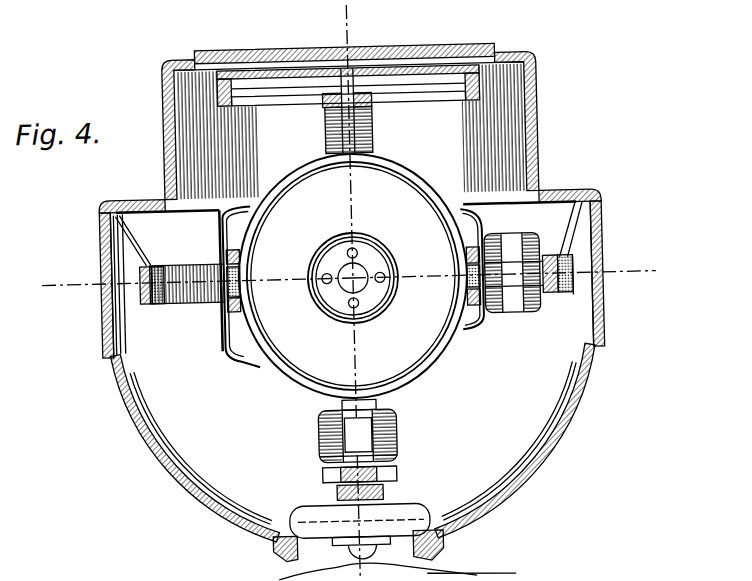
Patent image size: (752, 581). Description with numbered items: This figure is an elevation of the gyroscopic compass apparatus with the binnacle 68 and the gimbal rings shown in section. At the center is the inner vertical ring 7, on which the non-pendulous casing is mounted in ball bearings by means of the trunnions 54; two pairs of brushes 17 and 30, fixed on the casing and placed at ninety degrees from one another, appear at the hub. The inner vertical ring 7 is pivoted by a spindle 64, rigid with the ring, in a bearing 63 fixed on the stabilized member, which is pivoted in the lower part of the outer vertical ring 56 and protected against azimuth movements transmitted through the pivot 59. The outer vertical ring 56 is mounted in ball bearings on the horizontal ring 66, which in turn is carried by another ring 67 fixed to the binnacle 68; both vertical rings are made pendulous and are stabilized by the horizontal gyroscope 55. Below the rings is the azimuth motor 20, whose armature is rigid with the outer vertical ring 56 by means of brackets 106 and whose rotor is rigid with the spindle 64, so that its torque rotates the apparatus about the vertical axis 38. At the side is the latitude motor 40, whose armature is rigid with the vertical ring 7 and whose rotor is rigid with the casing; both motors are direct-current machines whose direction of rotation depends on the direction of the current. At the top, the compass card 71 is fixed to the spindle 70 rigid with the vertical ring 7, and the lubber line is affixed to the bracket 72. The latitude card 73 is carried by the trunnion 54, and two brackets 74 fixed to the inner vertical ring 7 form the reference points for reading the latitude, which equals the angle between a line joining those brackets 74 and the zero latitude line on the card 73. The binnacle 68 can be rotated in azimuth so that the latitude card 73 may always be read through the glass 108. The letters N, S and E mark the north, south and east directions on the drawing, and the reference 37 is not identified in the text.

The inner vertical ring 7 is at (287, 182).
The pair of brushes 17 is at (386, 277).
The azimuth motor 20 is at (392, 416).
The pair of brushes 30 is at (354, 251).
The housing inner wall 37 is at (96, 270).
The vertical axis 38 is at (353, 22).
The latitude motor 40 is at (532, 245).
The trunnions 54 is at (242, 276).
The horizontal gyroscope 55 is at (420, 513).
The outer vertical ring 56 is at (380, 142).
The pivot 59 is at (380, 493).
The bearing 63 is at (391, 474).
The spindle 64 is at (326, 460).
The horizontal ring 66 is at (165, 299).
The ring 67 is at (152, 301).
The binnacle 68 is at (599, 368).
The spindle 70 is at (373, 56).
The compass card 71 is at (443, 68).
The bracket 72 is at (484, 85).
The latitude card 73 is at (222, 235).
The brackets 74 is at (236, 197).
The brackets 106 is at (349, 437).
The glass 108 is at (101, 246).
The north axis N is at (185, 281).
The south axis S is at (515, 273).
The east reference E is at (370, 567).